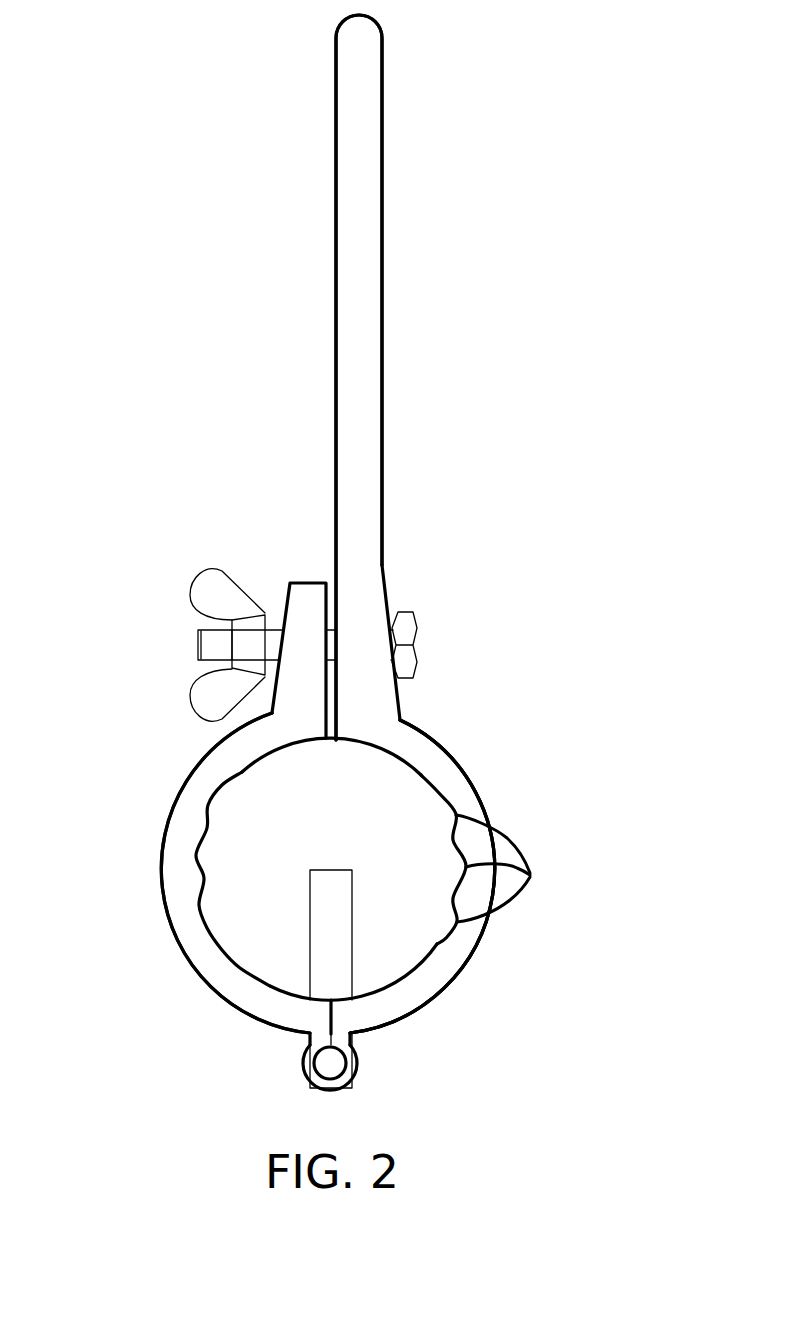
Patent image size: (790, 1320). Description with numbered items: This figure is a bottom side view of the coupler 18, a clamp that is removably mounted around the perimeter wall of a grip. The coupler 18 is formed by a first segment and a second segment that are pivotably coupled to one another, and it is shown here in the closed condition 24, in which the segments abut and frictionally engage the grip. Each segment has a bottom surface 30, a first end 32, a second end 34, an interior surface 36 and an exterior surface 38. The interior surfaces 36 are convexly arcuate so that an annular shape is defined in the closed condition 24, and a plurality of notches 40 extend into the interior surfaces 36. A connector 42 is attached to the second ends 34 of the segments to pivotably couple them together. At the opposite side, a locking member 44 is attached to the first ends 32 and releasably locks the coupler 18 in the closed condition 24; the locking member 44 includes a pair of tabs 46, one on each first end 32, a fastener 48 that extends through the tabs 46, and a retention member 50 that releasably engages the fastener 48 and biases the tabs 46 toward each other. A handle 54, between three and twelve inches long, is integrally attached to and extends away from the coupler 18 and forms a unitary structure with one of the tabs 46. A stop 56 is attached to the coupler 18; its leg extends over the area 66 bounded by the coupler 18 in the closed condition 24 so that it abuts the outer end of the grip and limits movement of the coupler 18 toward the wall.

The coupler 18 is at (150, 205).
The closed condition 24 is at (525, 973).
The bottom surface 30 is at (260, 995).
The first end 32 is at (405, 710).
The second end 34 is at (348, 1035).
The interior surface 36 is at (252, 791).
The exterior surface 38 is at (165, 857).
The notches 40 is at (530, 875).
The connector 42 is at (305, 1080).
The locking member 44 is at (287, 577).
The tabs 46 is at (302, 693).
The fastener 48 is at (408, 630).
The retention member 50 is at (215, 590).
The handle 54 is at (370, 198).
The stop 56 is at (335, 947).
The area 66 is at (250, 895).